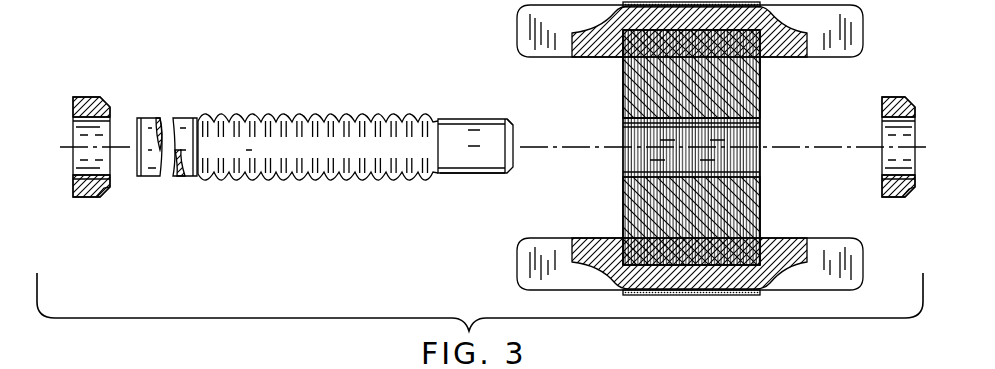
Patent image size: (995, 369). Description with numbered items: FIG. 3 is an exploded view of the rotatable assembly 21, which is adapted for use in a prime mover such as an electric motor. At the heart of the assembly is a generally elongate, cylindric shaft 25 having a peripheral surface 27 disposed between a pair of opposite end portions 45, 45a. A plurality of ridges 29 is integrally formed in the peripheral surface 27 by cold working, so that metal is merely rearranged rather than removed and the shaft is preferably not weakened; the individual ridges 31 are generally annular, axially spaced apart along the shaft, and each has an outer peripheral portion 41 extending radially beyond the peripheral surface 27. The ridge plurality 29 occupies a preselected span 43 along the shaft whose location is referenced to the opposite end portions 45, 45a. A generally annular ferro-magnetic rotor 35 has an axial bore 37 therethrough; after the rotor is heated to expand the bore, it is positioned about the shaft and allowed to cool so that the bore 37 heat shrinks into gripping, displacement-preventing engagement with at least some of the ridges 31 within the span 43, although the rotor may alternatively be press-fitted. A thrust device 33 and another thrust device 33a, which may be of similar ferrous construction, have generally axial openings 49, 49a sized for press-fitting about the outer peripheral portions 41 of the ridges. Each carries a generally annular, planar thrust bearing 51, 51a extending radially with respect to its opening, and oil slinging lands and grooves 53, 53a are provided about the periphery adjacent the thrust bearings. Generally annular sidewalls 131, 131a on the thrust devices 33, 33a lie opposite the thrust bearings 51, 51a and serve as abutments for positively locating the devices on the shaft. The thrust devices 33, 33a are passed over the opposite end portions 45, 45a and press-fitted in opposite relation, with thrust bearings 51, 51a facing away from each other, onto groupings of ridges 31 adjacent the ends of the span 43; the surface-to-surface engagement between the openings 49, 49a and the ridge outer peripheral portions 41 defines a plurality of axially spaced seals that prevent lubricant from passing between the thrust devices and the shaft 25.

The rotatable assembly 21 is at (440, 65).
The shaft 25 is at (492, 150).
The peripheral surface 27 is at (493, 175).
The plurality of ridges 29 is at (372, 147).
The ridges 31 is at (262, 180).
The thrust device 33 is at (93, 151).
The rotor 35 is at (690, 148).
The bore 37 is at (735, 177).
The outer peripheral portion 41 is at (313, 117).
The span 43 is at (318, 145).
The end portion 45 is at (152, 177).
The end portion 45a is at (498, 117).
The opening 49 is at (106, 168).
The opening 49a is at (882, 127).
The thrust bearing 51 is at (78, 182).
The thrust bearing 51a is at (916, 185).
The oil slinging lands and grooves 53 is at (97, 188).
The oil slinging lands and grooves 53a is at (899, 195).
The sidewall 131 is at (110, 115).
The sidewall 131a is at (882, 185).
The thrust device 33a is at (878, 161).